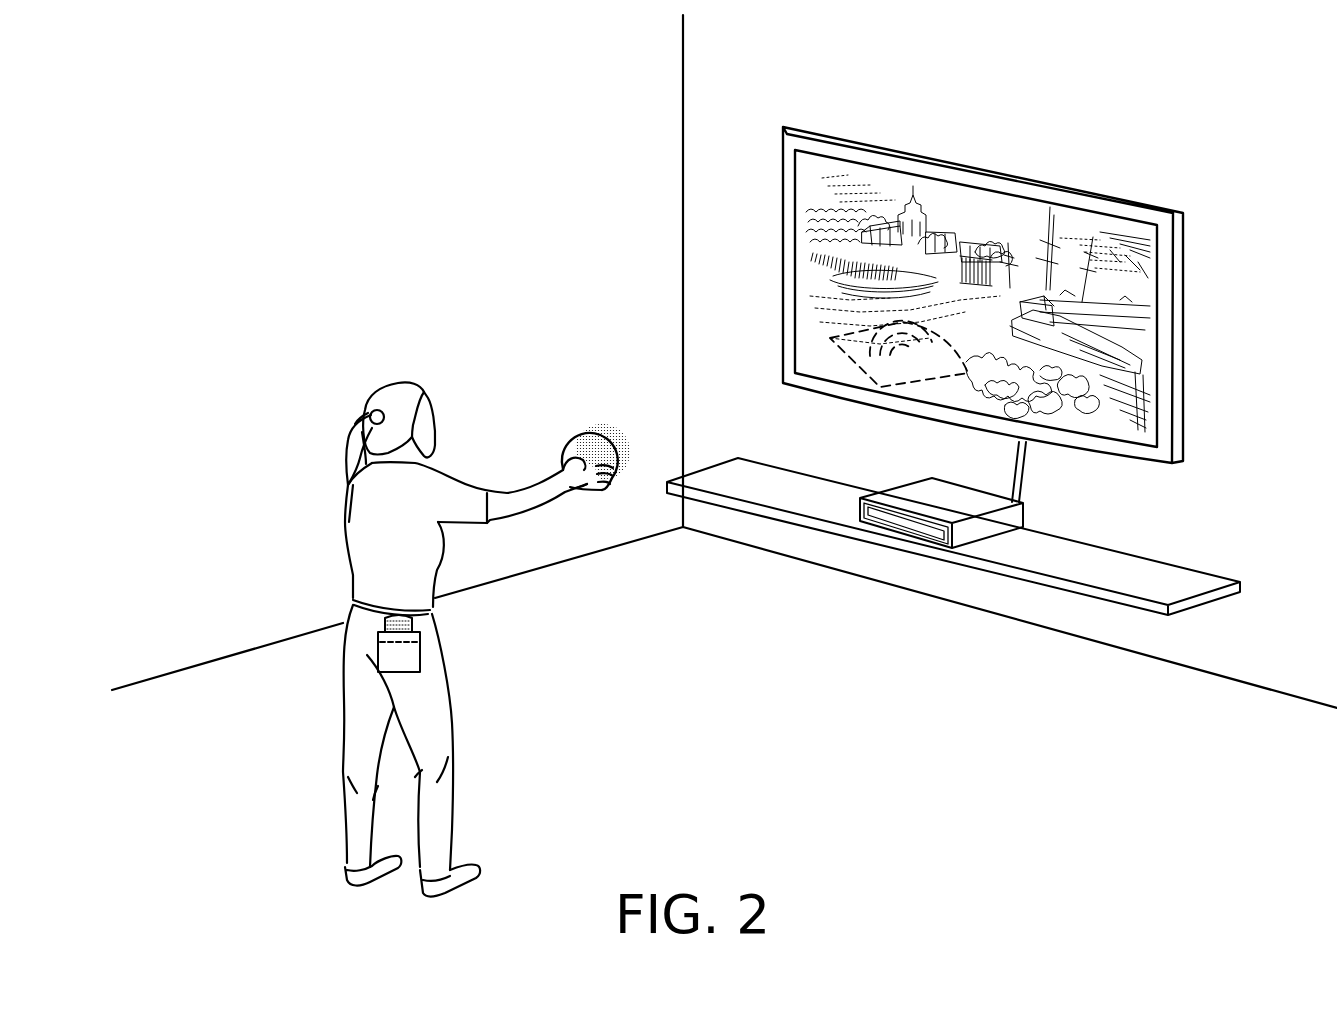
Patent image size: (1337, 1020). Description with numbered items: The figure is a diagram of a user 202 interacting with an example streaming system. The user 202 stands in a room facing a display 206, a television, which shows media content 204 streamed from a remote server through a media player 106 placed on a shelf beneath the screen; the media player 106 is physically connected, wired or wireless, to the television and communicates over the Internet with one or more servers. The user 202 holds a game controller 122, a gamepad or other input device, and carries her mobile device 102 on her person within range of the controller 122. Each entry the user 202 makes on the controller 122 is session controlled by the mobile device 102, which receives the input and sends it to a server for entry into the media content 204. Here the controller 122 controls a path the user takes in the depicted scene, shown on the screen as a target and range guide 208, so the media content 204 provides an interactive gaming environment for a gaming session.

The mobile device 102 is at (412, 622).
The media player 106 is at (885, 493).
The game controller 122 is at (562, 462).
The user 202 is at (345, 527).
The media content 204 is at (1140, 268).
The display 206 is at (783, 184).
The target and range guide 208 is at (845, 351).